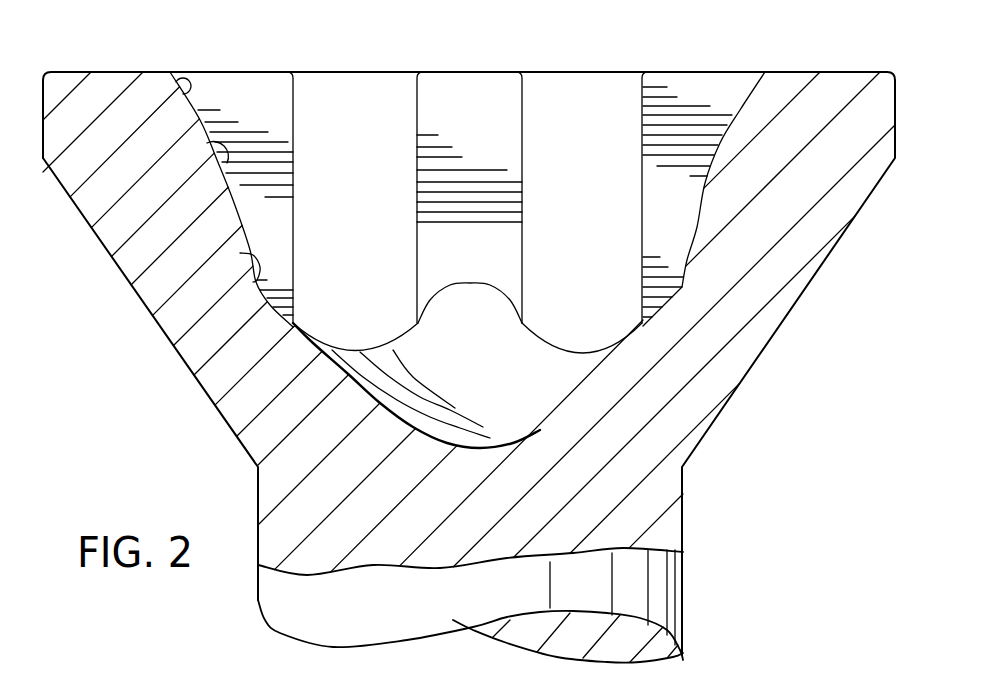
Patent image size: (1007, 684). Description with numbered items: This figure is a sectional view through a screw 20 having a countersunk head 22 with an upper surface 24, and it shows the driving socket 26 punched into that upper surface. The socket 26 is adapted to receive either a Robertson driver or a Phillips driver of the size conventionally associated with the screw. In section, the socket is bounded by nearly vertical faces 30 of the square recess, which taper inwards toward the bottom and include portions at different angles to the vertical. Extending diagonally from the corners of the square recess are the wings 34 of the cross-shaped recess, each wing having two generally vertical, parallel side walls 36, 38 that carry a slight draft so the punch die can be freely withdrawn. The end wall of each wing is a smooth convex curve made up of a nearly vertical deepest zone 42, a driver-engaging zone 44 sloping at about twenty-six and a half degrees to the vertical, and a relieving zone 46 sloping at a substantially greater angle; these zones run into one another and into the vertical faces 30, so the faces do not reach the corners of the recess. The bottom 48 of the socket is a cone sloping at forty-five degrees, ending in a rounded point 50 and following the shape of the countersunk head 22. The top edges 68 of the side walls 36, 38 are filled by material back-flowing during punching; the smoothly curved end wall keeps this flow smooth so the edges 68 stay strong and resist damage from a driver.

The screw 20 is at (690, 540).
The countersunk head 22 is at (800, 310).
The upper surface 24 is at (847, 70).
The driving socket 26 is at (576, 70).
The vertical faces 30 is at (378, 97).
The wings 34 is at (233, 94).
The side wall 36 is at (272, 107).
The side wall 38 is at (640, 102).
The deepest zone 42 is at (246, 254).
The driver-engaging zone 44 is at (207, 143).
The relieving zone 46 is at (176, 82).
The bottom 48 is at (410, 364).
The rounded point 50 is at (472, 440).
The top edges 68 is at (246, 70).